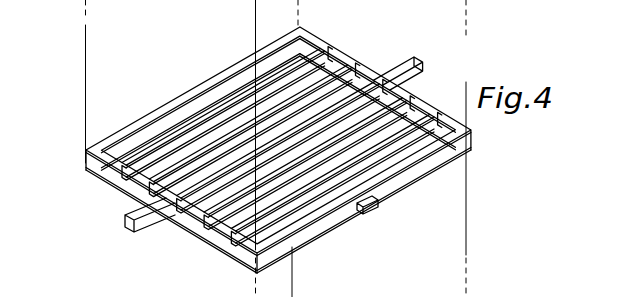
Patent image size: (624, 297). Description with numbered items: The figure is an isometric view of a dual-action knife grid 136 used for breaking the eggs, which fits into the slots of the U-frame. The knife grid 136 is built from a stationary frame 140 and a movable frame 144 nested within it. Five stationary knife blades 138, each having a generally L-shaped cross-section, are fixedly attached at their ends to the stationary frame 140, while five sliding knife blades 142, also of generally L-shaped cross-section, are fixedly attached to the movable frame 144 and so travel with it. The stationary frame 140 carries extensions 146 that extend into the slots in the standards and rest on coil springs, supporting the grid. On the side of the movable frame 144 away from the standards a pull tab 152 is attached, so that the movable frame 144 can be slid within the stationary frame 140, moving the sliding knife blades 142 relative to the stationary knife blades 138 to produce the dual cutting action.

The dual-action knife grid 136 is at (310, 150).
The stationary knife blades 138 is at (124, 144).
The stationary frame 140 is at (127, 175).
The sliding knife blades 142 is at (320, 62).
The movable frame 144 is at (322, 221).
The extensions 146 is at (134, 222).
The pull tab 152 is at (372, 207).